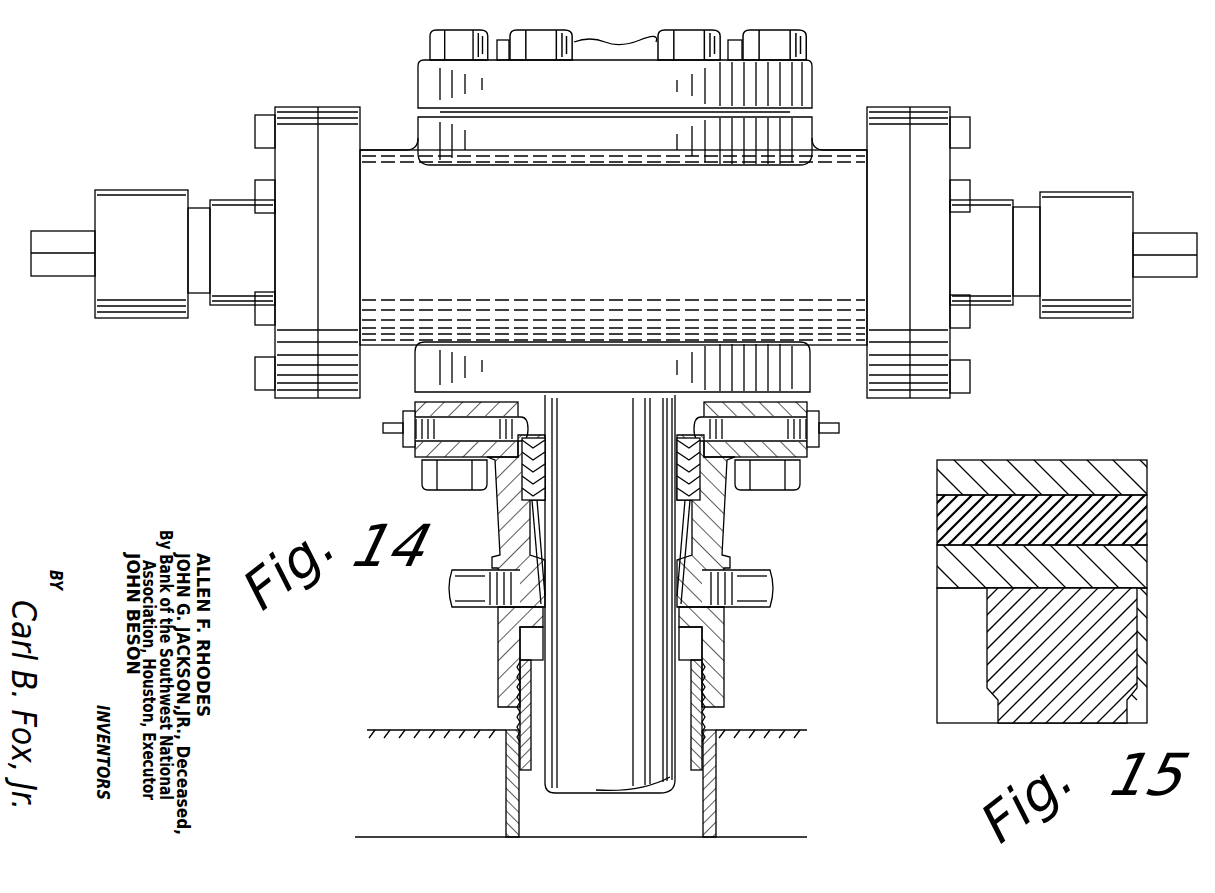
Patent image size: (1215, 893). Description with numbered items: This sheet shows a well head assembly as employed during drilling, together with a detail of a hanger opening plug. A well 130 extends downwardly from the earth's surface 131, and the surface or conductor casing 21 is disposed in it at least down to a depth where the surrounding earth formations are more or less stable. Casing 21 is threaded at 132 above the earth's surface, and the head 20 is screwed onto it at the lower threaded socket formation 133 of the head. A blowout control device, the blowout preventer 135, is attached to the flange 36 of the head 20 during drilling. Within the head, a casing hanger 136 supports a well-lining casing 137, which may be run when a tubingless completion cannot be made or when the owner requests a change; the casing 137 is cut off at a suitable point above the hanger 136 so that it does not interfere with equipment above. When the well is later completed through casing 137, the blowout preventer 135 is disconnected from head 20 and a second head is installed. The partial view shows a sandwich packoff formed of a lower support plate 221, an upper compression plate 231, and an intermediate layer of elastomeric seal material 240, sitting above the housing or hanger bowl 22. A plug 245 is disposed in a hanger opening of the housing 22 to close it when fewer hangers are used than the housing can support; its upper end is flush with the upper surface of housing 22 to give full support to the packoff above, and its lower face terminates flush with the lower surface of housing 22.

In FIG. 14, the head 20 is at (724, 536).
In FIG. 14, the surface or conductor casing 21 is at (708, 721).
In FIG. 15, the housing or hanger bowl 22 is at (945, 676).
In FIG. 14, the flange 36 is at (812, 453).
In FIG. 14, the well 130 is at (690, 822).
In FIG. 14, the earth's surface 131 is at (455, 725).
In FIG. 14, the threads 132 is at (708, 676).
In FIG. 14, the lower threaded socket formation 133 is at (522, 691).
In FIG. 14, the blowout preventer 135 is at (976, 324).
In FIG. 14, the casing hanger 136 is at (705, 508).
In FIG. 14, the well-lining casing 137 is at (618, 619).
In FIG. 15, the lower support plate 221 is at (1125, 565).
In FIG. 15, the upper compression plate 231 is at (1130, 473).
In FIG. 15, the elastomeric seal material 240 is at (1128, 520).
In FIG. 15, the plug 245 is at (1100, 658).